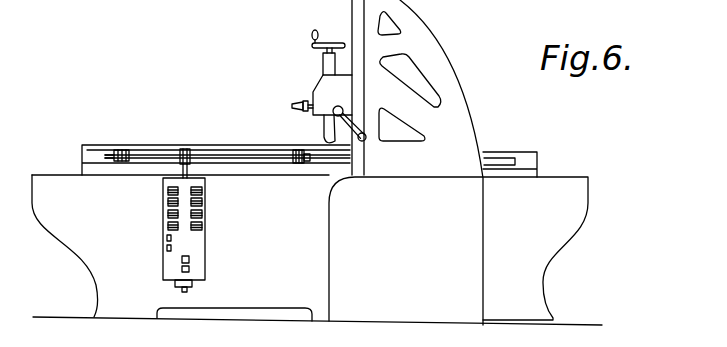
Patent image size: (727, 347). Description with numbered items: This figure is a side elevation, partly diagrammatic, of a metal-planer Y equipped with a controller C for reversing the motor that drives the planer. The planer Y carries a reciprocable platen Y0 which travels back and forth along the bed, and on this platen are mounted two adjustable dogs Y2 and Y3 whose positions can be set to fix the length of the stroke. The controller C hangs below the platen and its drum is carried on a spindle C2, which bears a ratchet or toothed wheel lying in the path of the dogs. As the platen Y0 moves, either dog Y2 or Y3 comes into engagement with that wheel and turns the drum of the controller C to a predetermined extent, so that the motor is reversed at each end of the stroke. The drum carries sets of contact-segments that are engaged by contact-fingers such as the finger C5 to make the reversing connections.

The metal-planer Y is at (479, 126).
The adjustable dog Y2 is at (128, 134).
The contact-finger C5 is at (187, 148).
The reciprocable platen Y0 is at (245, 148).
The adjustable dog Y3 is at (298, 150).
The spindle of the controller-drum C2 is at (157, 182).
The controller C is at (194, 243).